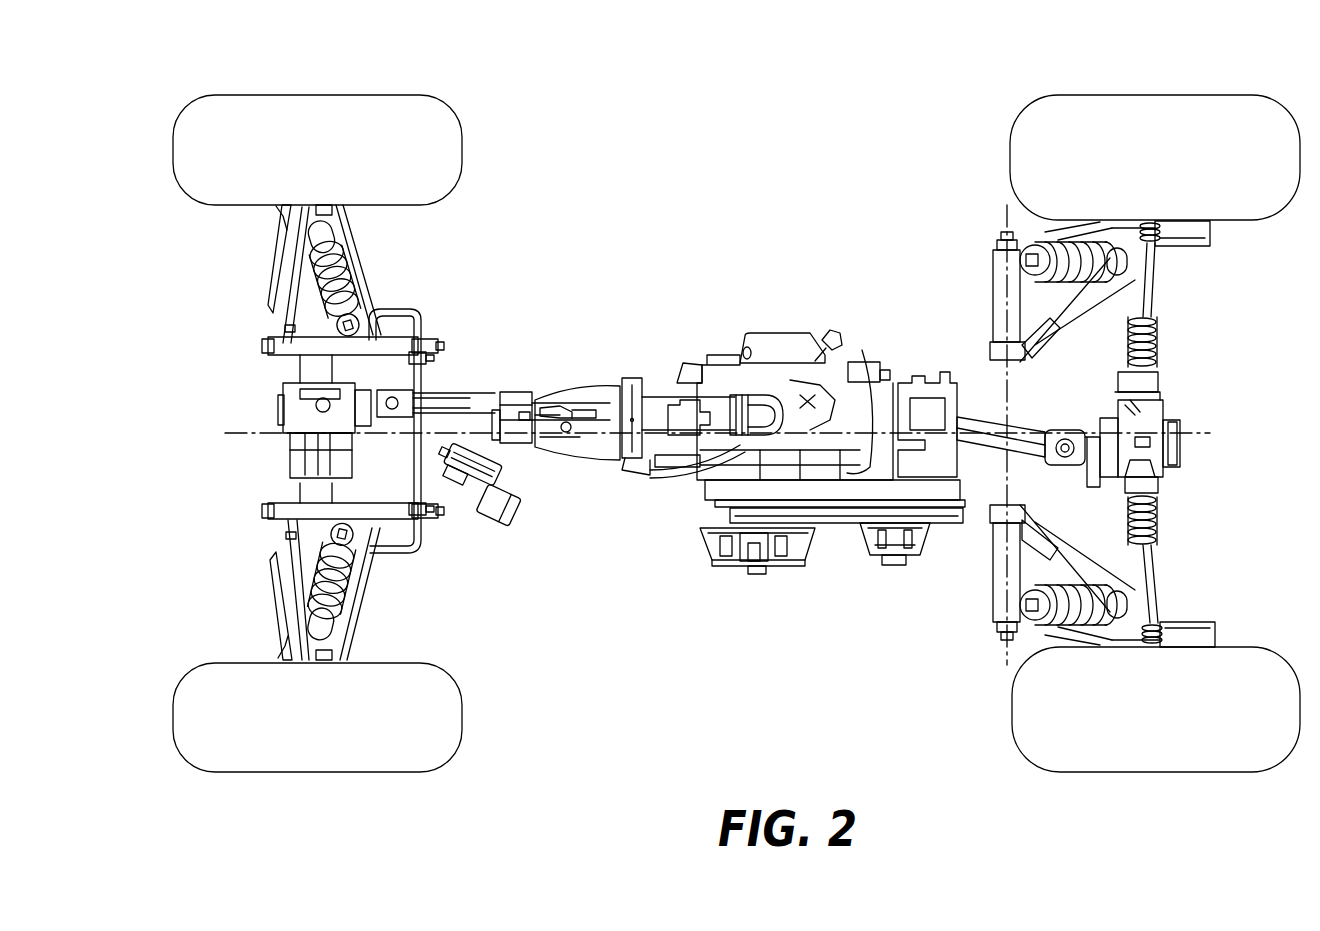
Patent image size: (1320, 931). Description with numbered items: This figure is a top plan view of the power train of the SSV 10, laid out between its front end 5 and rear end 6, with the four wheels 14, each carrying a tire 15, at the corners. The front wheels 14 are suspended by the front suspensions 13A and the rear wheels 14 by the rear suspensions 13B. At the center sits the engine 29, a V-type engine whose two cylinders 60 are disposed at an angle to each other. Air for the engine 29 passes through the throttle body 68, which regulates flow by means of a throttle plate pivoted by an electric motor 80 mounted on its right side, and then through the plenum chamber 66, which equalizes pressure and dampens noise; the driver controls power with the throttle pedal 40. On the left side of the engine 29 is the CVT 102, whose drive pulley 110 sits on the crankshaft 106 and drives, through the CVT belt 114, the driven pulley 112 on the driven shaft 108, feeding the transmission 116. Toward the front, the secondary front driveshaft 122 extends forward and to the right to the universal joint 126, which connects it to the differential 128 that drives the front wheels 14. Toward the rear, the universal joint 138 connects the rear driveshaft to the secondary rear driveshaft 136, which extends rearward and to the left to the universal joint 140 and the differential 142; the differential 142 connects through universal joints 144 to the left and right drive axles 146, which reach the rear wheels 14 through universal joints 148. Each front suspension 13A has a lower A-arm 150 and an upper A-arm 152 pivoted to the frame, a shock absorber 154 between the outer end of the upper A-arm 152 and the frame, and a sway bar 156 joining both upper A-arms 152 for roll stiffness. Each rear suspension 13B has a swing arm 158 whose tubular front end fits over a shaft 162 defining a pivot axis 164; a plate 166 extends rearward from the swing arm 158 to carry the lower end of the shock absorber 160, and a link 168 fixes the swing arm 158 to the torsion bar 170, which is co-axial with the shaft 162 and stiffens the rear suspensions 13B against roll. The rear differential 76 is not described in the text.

The front end 5 is at (192, 410).
The rear end 6 is at (1241, 440).
The SSV 10 is at (700, 138).
The front suspensions 13A is at (243, 268).
The rear suspensions 13B is at (966, 232).
The wheels 14 is at (248, 118).
The tire 15 is at (385, 118).
The engine 29 is at (780, 375).
The throttle pedal 40 is at (500, 530).
The cylinders 60 is at (700, 366).
The plenum chamber 66 is at (632, 476).
The throttle body 68 is at (522, 450).
The rear differential 76 is at (1205, 433).
The electric motor 80 is at (530, 392).
The continuously variable transmission (CVT) 102 is at (788, 583).
The crankshaft 106 is at (753, 572).
The driven shaft 108 is at (900, 566).
The drive pulley 110 is at (705, 566).
The driven pulley 112 is at (890, 560).
The CVT belt 114 is at (820, 522).
The transmission 116 is at (915, 390).
The secondary front driveshaft 122 is at (490, 400).
The universal joint 126 is at (418, 336).
The differential 128 is at (285, 405).
The secondary rear driveshaft 136 is at (1030, 448).
The universal joint 138 is at (985, 416).
The universal joint 140 is at (1073, 438).
The differential 142 is at (1175, 450).
The universal joints 144 is at (1160, 347).
The drive axles 146 is at (1155, 295).
The universal joints 148 is at (1212, 233).
The lower A-arm 150 is at (300, 246).
The upper A-arm 152 is at (290, 343).
The shock absorber 154 is at (350, 266).
The sway bar 156 is at (414, 476).
The swing arm 158 is at (1035, 305).
The shock absorber 160 is at (1072, 585).
The shaft 162 is at (990, 236).
The pivot axis 164 is at (1003, 642).
The plate 166 is at (1098, 288).
The link 168 is at (1050, 346).
The torsion bar 170 is at (1000, 480).